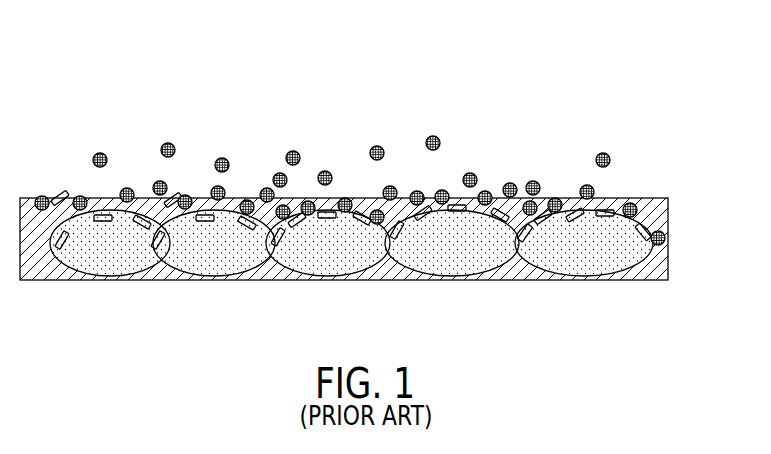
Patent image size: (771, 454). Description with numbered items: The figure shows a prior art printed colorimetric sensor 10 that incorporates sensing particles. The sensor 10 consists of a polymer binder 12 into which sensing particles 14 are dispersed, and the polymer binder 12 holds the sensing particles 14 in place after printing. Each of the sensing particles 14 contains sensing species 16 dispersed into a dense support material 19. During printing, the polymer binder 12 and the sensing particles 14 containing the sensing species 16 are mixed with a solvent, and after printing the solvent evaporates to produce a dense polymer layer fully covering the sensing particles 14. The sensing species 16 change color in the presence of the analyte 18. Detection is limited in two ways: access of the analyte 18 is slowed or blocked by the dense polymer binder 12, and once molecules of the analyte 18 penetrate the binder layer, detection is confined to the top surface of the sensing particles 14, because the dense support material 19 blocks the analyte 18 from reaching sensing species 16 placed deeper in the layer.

The printed colorimetric sensor 10 is at (366, 181).
The polymer binder 12 is at (652, 221).
The sensing particles 14 is at (351, 278).
The sensing species 16 is at (613, 207).
The analyte 18 is at (343, 197).
The dense support material 19 is at (351, 243).